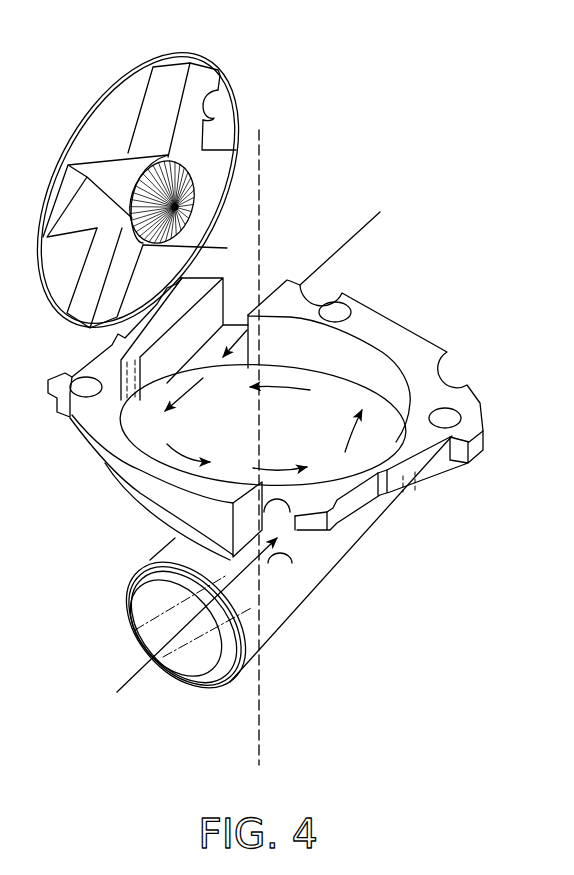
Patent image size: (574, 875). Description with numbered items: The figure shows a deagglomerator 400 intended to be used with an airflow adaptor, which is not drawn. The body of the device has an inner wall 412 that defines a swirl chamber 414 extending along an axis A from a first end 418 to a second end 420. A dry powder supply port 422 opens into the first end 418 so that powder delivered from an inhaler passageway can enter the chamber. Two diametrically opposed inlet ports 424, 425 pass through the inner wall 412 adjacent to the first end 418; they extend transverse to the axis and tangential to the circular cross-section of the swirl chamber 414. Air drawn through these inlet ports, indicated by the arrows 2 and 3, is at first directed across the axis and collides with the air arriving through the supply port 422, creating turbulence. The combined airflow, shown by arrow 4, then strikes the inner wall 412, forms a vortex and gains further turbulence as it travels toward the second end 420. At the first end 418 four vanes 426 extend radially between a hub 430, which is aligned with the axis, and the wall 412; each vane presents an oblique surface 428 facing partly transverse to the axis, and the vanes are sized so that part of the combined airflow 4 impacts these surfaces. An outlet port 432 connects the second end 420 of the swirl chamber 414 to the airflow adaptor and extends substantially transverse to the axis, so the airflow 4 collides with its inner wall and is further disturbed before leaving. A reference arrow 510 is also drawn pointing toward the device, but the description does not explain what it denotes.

The deagglomerator 400 is at (280, 30).
The first end 418 is at (125, 92).
The oblique surface 428 is at (165, 75).
The vanes 426 is at (205, 75).
The dry powder supply port 422 is at (214, 100).
The hub 430 is at (182, 212).
The flow direction 510 is at (340, 146).
The inner wall 412 is at (366, 367).
The inlet port 424 is at (225, 282).
The combined airflow 4 is at (343, 295).
The swirl chamber 414 is at (240, 436).
The airflow 2 is at (368, 228).
The second end 420 is at (277, 518).
The inlet port 425 is at (275, 568).
The outlet port 432 is at (190, 680).
The airflow 3 is at (130, 677).